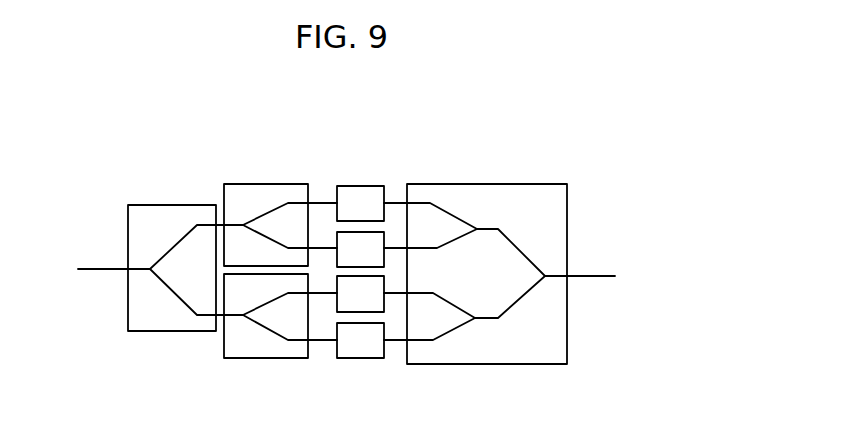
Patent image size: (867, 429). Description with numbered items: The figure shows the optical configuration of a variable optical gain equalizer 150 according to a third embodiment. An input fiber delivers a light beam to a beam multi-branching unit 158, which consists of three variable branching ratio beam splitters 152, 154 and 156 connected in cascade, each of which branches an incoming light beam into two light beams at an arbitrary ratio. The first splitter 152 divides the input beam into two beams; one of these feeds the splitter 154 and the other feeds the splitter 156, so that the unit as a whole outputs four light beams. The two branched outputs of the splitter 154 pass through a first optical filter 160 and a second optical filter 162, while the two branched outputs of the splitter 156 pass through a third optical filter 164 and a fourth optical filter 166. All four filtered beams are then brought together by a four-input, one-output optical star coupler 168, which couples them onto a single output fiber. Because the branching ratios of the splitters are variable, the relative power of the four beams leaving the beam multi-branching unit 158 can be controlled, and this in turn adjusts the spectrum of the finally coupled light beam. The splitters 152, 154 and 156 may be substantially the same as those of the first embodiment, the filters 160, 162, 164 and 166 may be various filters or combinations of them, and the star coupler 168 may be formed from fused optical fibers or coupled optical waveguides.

The variable optical gain equalizer 150 is at (353, 150).
The variable branching ratio beam splitter 152 is at (155, 215).
The variable branching ratio beam splitter 154 is at (264, 194).
The variable branching ratio beam splitter 156 is at (239, 350).
The beam multi-branching unit 158 is at (313, 147).
The optical filter 160 is at (368, 186).
The optical filter 162 is at (410, 238).
The optical filter 164 is at (383, 303).
The optical filter 166 is at (353, 355).
The optical star coupler 168 is at (528, 352).